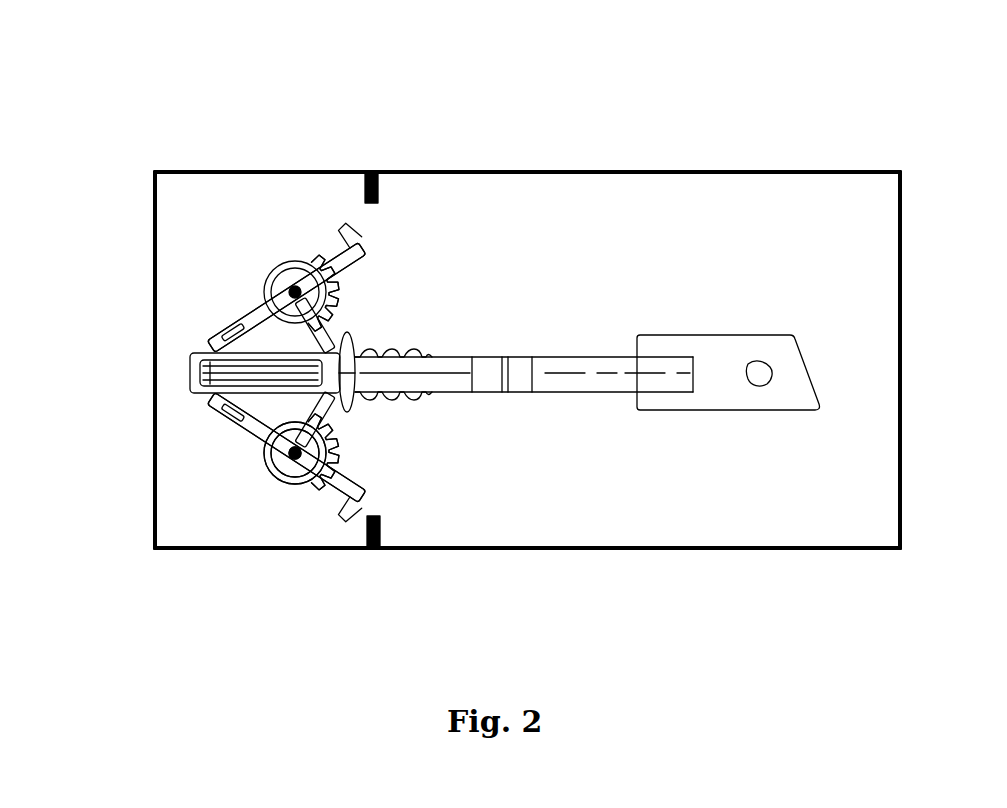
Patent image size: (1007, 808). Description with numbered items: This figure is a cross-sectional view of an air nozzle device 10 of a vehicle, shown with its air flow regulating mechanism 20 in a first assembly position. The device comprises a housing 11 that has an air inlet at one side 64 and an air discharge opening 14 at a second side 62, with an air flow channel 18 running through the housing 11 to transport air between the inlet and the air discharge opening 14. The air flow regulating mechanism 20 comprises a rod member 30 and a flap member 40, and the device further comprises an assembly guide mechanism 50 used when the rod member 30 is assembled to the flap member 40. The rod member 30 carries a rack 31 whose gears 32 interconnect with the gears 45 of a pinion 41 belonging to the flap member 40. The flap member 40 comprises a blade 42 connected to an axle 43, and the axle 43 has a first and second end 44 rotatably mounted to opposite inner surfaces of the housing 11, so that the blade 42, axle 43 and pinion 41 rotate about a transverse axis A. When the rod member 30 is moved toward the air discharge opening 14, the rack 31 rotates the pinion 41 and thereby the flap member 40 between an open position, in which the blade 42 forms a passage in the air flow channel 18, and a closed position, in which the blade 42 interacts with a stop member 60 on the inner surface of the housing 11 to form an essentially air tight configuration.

The air nozzle device 10 is at (527, 275).
The housing 11 is at (527, 113).
The air discharge opening 14 is at (487, 331).
The air flow channel 18 is at (527, 313).
The air flow regulating mechanism 20 is at (283, 227).
The axis A is at (277, 209).
The rod member 30 is at (728, 226).
The rack 31 is at (441, 346).
The gears of the rack 32 is at (571, 482).
The flap member 40 is at (283, 531).
The pinion 41 is at (397, 535).
The blade 42 is at (224, 376).
The axle 43 is at (206, 558).
The first and second end 44 is at (221, 542).
The gears of the pinion 45 is at (374, 551).
The assembly guide mechanism 50 is at (444, 344).
The stop member 60 is at (339, 320).
The second side 62 is at (92, 514).
The one side 64 is at (906, 527).